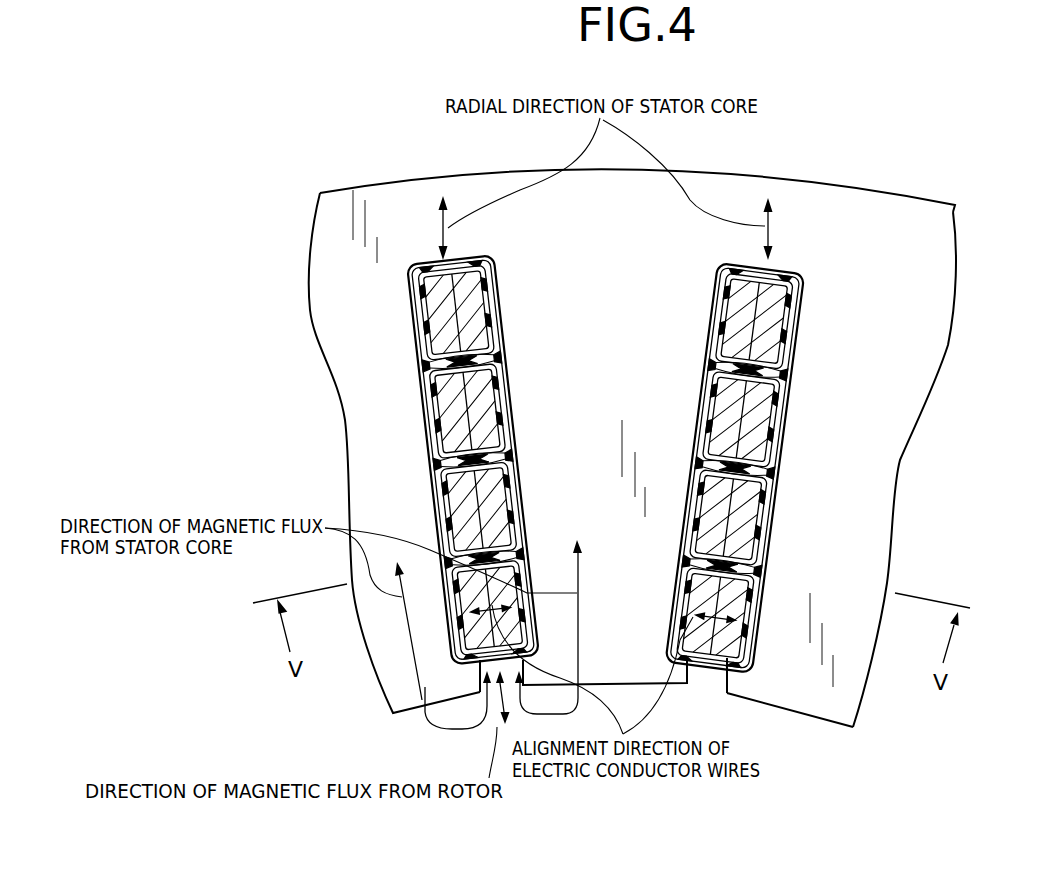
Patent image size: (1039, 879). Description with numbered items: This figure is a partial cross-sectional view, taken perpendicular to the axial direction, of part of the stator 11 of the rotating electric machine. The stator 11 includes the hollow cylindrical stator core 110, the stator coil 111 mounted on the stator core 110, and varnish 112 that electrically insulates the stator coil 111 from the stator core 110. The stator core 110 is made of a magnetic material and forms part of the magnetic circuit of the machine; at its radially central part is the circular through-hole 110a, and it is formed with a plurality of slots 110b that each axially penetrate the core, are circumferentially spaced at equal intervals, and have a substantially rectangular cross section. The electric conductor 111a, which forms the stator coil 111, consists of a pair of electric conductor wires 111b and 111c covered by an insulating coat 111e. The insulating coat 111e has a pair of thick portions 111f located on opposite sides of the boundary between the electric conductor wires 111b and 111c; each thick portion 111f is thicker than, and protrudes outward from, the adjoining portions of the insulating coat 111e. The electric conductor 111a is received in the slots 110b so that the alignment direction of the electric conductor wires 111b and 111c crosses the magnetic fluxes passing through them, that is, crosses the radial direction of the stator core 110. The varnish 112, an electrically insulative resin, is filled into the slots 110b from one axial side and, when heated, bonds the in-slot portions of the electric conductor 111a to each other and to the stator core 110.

The stator 11 is at (793, 73).
The stator core 110 is at (883, 447).
The through-hole 110a is at (783, 707).
The slots 110b is at (523, 553).
The stator coil 111 is at (497, 284).
The electric conductor 111a is at (497, 284).
The electric conductor wire 111b is at (477, 323).
The electric conductor wire 111c is at (427, 310).
The insulating coat 111e is at (494, 337).
The thick portions 111f is at (456, 263).
The varnish 112 is at (500, 460).